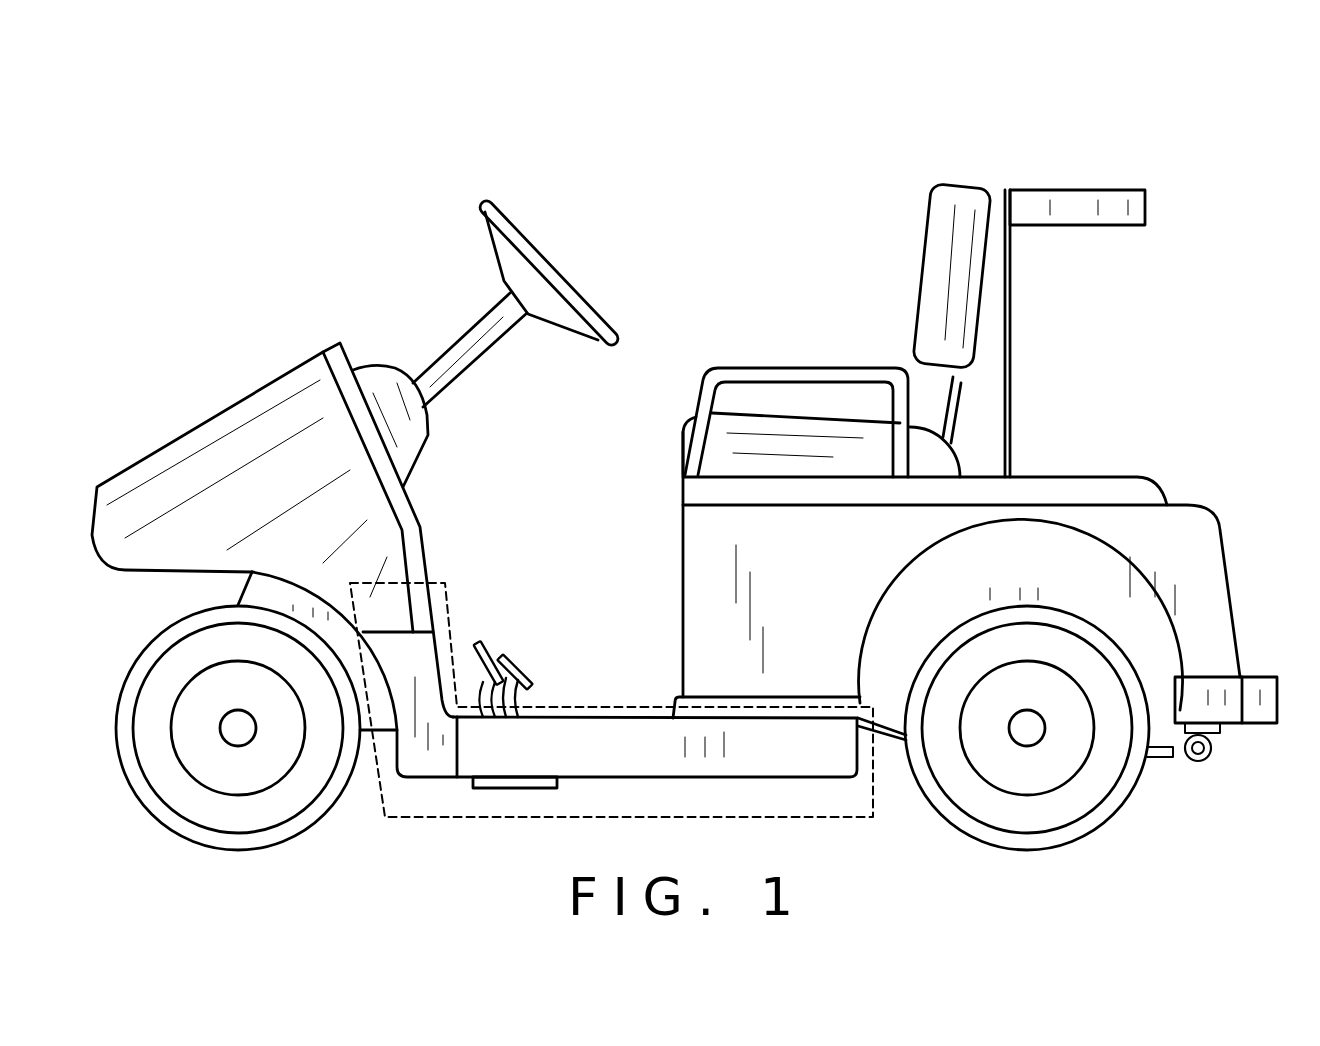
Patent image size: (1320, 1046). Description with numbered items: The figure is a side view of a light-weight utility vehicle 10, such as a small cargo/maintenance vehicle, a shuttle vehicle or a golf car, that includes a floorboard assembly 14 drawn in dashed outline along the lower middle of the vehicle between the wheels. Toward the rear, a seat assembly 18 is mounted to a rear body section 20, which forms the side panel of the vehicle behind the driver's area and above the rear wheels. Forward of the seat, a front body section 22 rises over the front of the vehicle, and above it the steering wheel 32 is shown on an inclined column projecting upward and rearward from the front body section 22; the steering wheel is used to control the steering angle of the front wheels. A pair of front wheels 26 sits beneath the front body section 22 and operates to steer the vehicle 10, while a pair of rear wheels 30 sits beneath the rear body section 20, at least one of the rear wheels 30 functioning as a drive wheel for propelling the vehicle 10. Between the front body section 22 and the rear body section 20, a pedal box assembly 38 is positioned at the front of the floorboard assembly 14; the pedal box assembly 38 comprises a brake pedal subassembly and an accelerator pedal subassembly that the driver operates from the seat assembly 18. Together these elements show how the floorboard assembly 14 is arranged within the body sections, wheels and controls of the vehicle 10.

The light-weight utility vehicle 10 is at (863, 157).
The floorboard assembly 14 is at (790, 817).
The seat assembly 18 is at (773, 437).
The rear body section 20 is at (713, 577).
The front body section 22 is at (258, 432).
The front wheels 26 is at (153, 697).
The rear wheels 30 is at (1070, 805).
The steering wheel 32 is at (550, 260).
The pedal box assembly 38 is at (563, 717).